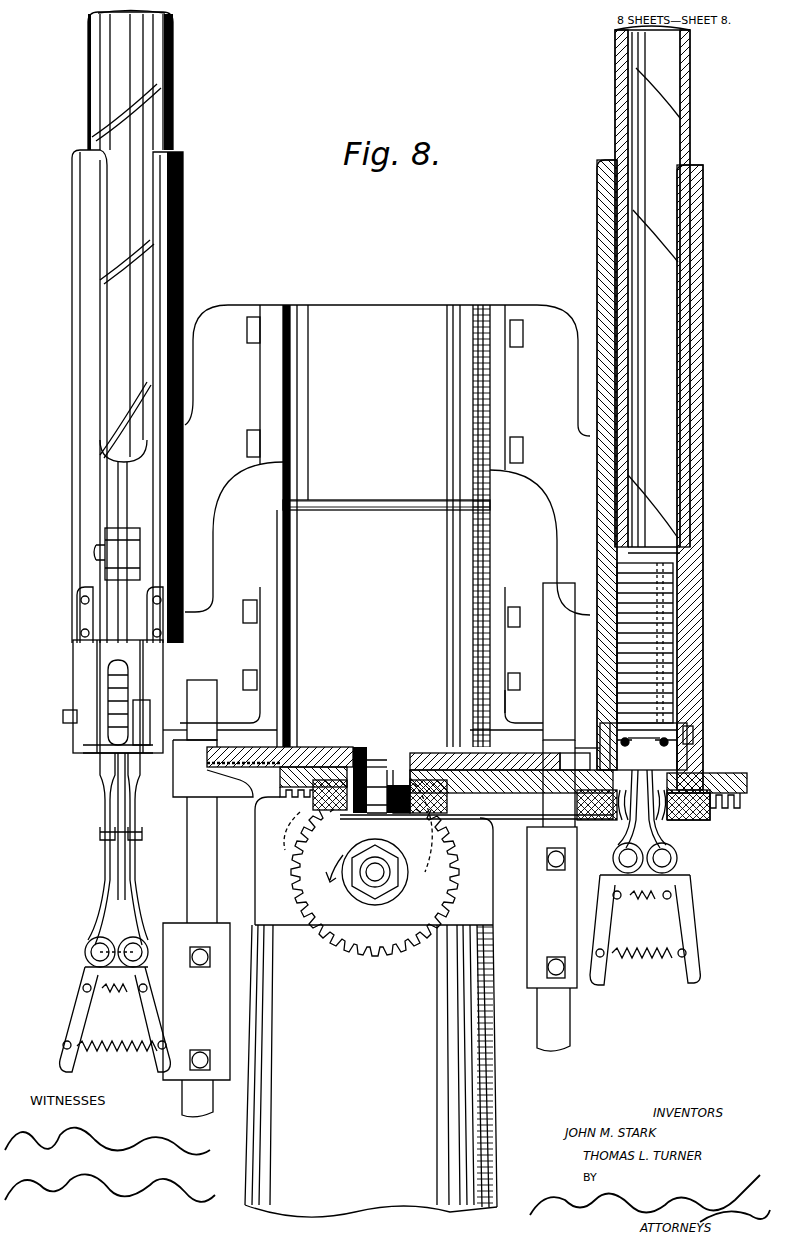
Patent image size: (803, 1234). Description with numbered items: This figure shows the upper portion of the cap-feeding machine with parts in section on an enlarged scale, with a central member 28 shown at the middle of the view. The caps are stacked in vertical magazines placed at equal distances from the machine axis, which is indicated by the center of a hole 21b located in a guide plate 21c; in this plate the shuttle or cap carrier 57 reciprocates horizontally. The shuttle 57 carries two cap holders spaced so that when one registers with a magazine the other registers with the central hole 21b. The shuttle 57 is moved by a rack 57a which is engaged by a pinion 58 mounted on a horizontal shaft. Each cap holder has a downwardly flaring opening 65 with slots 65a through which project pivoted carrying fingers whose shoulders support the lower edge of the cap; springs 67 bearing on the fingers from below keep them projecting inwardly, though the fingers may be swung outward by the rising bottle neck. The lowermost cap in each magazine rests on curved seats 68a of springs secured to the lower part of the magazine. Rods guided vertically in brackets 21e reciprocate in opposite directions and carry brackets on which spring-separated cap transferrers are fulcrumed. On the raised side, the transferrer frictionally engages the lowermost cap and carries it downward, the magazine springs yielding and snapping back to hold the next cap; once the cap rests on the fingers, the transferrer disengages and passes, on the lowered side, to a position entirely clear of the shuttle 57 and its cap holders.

The piston 28 is at (383, 526).
The hole 21b is at (368, 752).
The guide plate 21c is at (318, 740).
The bracket 21e is at (226, 768).
The shuttle or cap carrier 57 is at (713, 775).
The rack 57a is at (733, 810).
The pinion 58 is at (374, 876).
The downwardly flaring opening 65 is at (398, 805).
The slot 65a is at (393, 770).
The spring 67 is at (379, 830).
The curved seat 68a is at (600, 740).